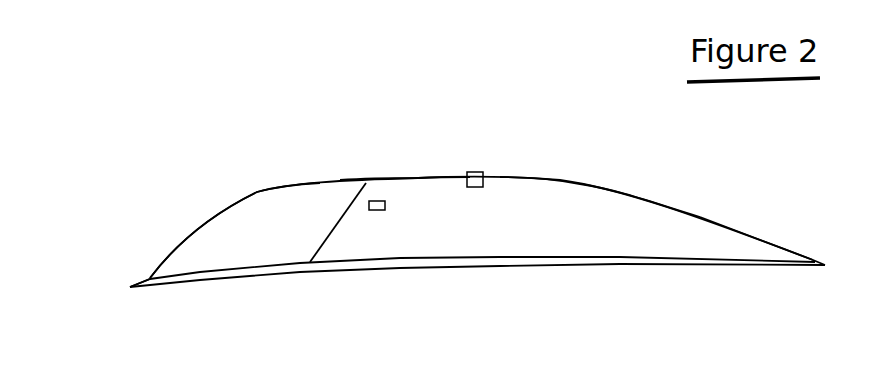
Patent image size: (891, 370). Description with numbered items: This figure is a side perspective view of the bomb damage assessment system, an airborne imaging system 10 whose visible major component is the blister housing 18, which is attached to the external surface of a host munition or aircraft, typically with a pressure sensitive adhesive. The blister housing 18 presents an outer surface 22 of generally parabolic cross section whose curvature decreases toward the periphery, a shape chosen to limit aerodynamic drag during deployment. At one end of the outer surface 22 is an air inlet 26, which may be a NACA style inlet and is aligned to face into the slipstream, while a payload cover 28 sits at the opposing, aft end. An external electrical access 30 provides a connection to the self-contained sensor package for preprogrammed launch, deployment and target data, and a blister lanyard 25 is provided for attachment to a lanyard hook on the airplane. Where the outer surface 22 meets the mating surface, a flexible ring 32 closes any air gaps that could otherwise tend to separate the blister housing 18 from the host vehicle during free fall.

The airborne imaging system 10 is at (710, 177).
The blister housing 18 is at (418, 180).
The outer surface 22 is at (523, 205).
The blister lanyard 25 is at (481, 178).
The air inlet 26 is at (718, 220).
The payload cover 28 is at (262, 212).
The external electrical access 30 is at (375, 198).
The flexible ring 32 is at (145, 274).